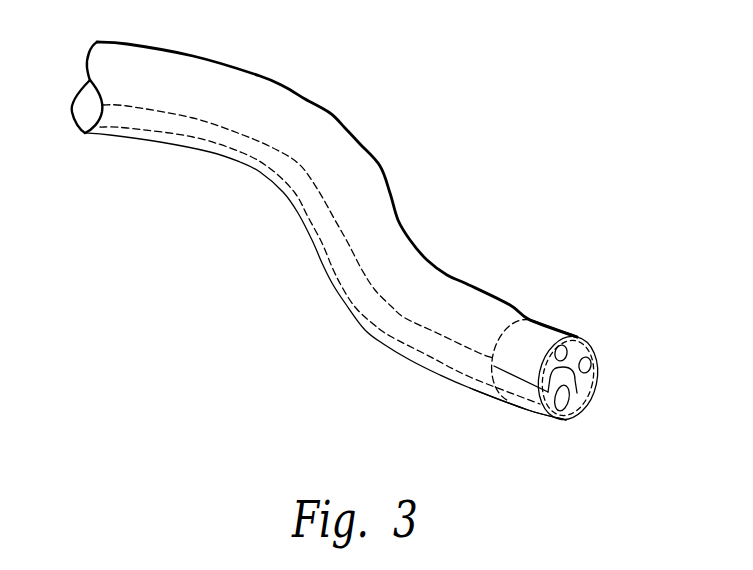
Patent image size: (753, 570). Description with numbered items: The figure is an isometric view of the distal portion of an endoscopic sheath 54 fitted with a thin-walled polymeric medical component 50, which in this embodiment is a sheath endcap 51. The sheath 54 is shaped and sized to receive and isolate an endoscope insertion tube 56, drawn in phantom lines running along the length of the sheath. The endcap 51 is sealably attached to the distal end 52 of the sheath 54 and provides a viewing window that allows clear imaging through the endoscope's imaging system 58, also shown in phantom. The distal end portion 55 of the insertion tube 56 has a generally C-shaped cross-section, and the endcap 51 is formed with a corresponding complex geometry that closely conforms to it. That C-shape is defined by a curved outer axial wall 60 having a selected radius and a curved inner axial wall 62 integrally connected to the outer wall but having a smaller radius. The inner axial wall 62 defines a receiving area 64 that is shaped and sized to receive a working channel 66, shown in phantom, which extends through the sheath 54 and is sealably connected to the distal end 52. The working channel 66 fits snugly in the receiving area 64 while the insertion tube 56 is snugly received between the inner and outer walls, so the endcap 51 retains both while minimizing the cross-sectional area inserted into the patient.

The thin-walled polymeric medical component 50 is at (537, 320).
The sheath endcap 51 is at (511, 368).
The distal end 52 is at (517, 392).
The sheath 54 is at (380, 167).
The distal end portion 55 is at (548, 337).
The endoscope insertion tube 56 is at (272, 78).
The imaging system 58 is at (600, 366).
The curved outer axial wall 60 is at (511, 336).
The curved inner axial wall 62 is at (577, 388).
The receiving area 64 is at (563, 390).
The working channel 66 is at (372, 318).